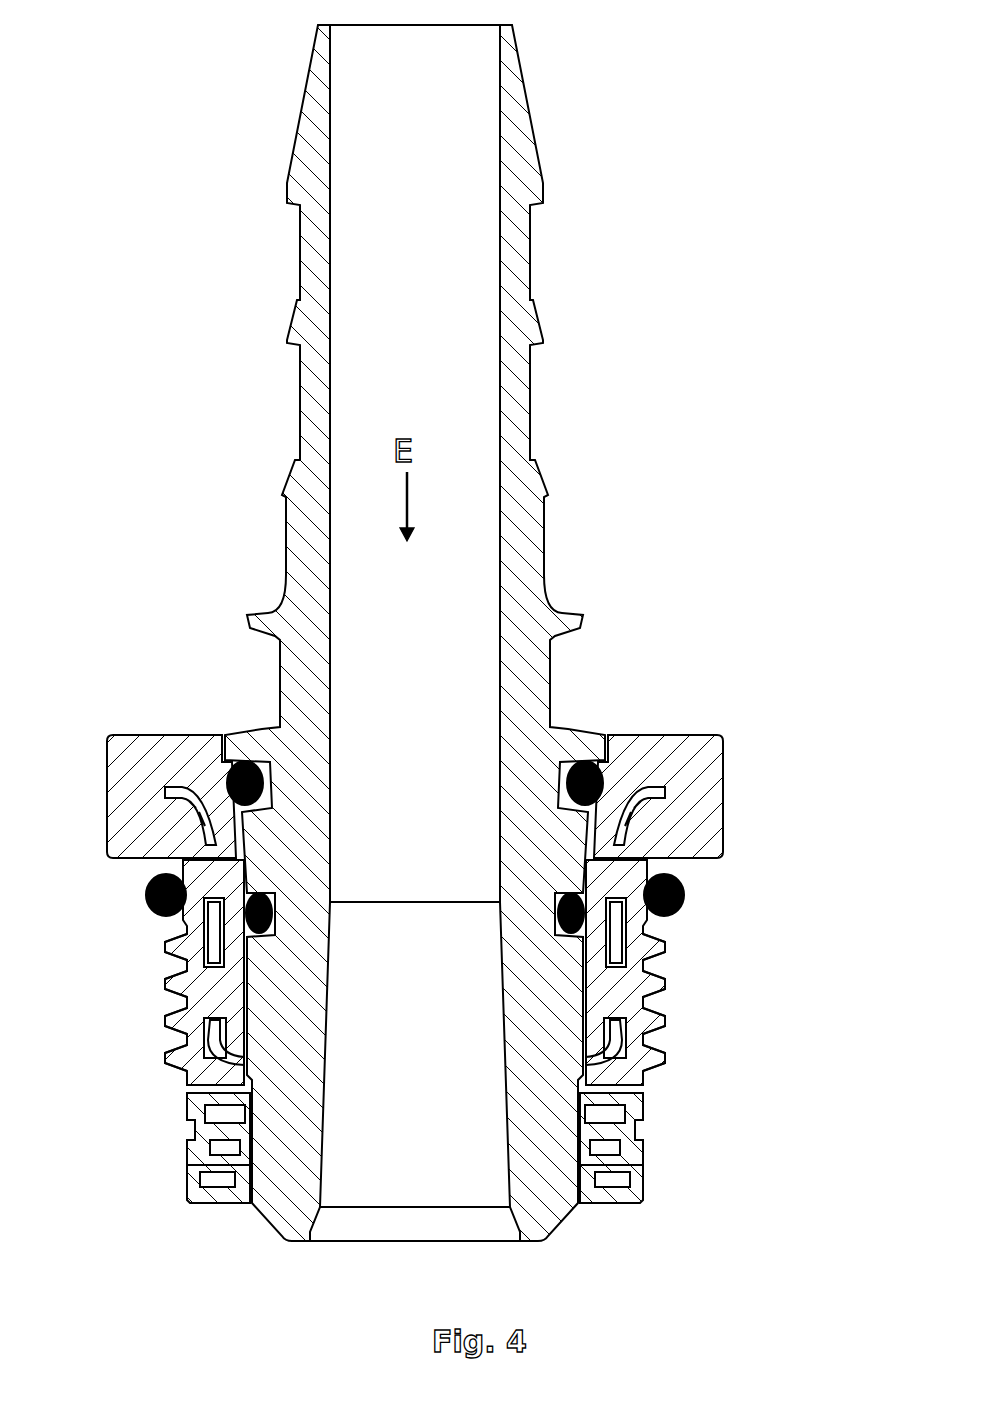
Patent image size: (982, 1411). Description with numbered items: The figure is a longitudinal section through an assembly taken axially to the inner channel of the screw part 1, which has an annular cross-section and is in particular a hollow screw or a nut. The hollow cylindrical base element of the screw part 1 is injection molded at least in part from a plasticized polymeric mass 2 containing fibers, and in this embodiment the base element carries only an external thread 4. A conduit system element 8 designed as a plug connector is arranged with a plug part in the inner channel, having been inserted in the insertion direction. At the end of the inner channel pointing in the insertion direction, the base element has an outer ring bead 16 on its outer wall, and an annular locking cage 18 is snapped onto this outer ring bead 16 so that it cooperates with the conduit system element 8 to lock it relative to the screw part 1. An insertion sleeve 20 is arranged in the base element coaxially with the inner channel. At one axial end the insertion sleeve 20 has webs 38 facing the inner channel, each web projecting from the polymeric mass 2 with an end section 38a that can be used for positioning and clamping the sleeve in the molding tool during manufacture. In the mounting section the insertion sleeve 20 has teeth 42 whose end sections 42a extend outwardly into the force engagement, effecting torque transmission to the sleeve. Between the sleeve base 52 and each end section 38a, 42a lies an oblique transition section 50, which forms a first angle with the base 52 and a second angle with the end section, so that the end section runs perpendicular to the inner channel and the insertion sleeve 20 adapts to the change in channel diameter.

The screw part 1 is at (162, 714).
The plasticized polymeric mass 2 is at (668, 748).
The external thread 4 is at (174, 988).
The conduit system element 8 is at (515, 277).
The outer ring bead 16 is at (632, 1127).
The locking cage 18 is at (633, 1180).
The insertion sleeve 20 is at (187, 942).
The webs 38 is at (175, 1060).
The end section of web 38a is at (630, 1042).
The teeth 42 is at (176, 797).
The end section of tooth 42a is at (662, 785).
The transition section 50 is at (635, 830).
The sleeve base 52 is at (627, 917).